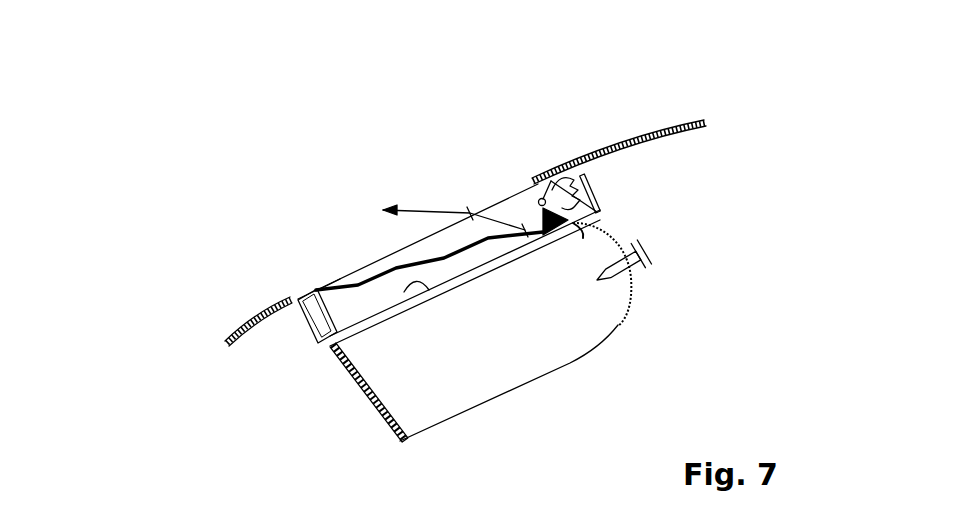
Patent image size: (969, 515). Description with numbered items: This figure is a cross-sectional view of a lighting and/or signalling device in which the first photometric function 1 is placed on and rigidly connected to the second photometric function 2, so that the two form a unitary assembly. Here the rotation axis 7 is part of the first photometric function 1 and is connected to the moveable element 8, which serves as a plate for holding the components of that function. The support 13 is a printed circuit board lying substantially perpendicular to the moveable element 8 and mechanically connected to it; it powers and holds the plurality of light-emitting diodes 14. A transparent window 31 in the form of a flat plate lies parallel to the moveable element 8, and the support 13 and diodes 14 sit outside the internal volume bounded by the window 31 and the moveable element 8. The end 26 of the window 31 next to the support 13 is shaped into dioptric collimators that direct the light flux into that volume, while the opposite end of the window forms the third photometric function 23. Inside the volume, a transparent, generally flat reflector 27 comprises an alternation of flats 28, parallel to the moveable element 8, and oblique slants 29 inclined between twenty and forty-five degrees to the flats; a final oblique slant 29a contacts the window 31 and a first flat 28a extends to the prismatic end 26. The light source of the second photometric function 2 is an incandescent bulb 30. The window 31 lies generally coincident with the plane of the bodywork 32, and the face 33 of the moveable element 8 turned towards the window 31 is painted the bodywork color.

The first photometric function 1 is at (513, 167).
The second photometric function 2 is at (622, 332).
The rotation axis 7 is at (553, 176).
The moveable element 8 is at (600, 219).
The support 13 is at (602, 196).
The light-emitting diodes 14 is at (578, 178).
The third photometric function 23 is at (320, 325).
The end of the window 26 is at (585, 224).
The reflector 27 is at (377, 300).
The flats 28 is at (382, 268).
The first flat 28a is at (583, 232).
The oblique slants 29 is at (420, 256).
The final oblique slant 29a is at (333, 283).
The incandescent bulb 30 is at (637, 262).
The transparent window 31 is at (357, 268).
The bodywork 32 is at (662, 124).
The face 33 is at (404, 292).